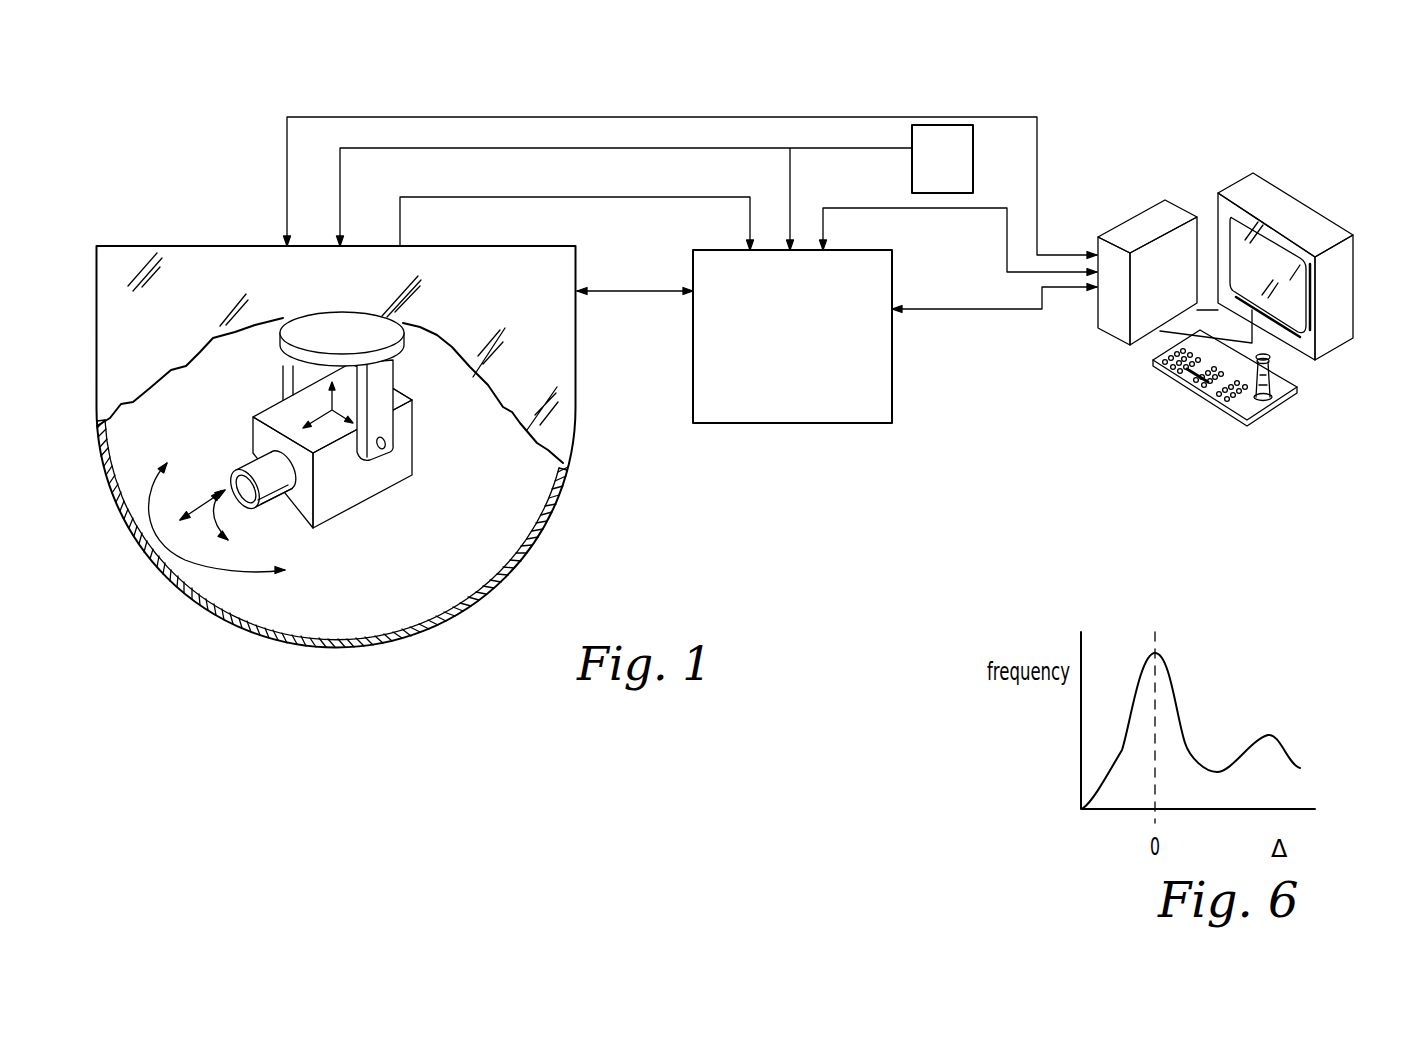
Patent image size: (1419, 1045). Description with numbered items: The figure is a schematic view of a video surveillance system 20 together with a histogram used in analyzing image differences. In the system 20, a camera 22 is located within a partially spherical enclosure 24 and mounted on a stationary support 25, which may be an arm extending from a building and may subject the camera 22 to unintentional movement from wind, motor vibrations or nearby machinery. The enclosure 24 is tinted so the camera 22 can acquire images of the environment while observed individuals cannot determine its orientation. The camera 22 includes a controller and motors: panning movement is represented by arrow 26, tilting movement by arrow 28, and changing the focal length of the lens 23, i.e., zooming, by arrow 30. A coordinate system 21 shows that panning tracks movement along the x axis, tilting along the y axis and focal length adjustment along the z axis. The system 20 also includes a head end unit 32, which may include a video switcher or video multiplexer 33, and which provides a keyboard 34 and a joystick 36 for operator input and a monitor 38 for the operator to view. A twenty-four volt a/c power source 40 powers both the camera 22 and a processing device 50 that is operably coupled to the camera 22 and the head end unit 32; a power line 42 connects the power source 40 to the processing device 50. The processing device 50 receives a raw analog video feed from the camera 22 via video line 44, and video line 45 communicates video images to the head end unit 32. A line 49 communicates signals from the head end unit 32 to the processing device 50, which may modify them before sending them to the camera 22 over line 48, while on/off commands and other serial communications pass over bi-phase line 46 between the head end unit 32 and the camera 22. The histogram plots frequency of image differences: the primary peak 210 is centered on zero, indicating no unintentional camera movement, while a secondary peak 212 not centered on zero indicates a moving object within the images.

In FIG. 1, the video surveillance system 20 is at (559, 62).
In FIG. 1, the coordinate system 21 is at (325, 419).
In FIG. 1, the camera 22 is at (357, 489).
In FIG. 1, the lens 23 is at (250, 481).
In FIG. 1, the partially spherical enclosure 24 is at (560, 437).
In FIG. 1, the support 25 is at (322, 330).
In FIG. 1, the arrow 26 is at (212, 565).
In FIG. 1, the arrow 28 is at (208, 508).
In FIG. 1, the arrow 30 is at (225, 498).
In FIG. 1, the head end unit 32 is at (1128, 469).
In FIG. 1, the video multiplexer 33 is at (1140, 215).
In FIG. 1, the keyboard 34 is at (1173, 377).
In FIG. 1, the joystick 36 is at (1288, 397).
In FIG. 1, the monitor 38 is at (1310, 290).
In FIG. 1, the 24 volt a/c power source 40 is at (960, 125).
In FIG. 1, the power line 42 is at (773, 148).
In FIG. 1, the video line 44 is at (598, 197).
In FIG. 1, the video line 45 is at (968, 212).
In FIG. 1, the bi-phase line 46 is at (628, 117).
In FIG. 1, the line 48 is at (632, 293).
In FIG. 1, the line 49 is at (952, 309).
In FIG. 1, the processing device 50 is at (892, 413).
In FIG. 6, the primary peak 210 is at (1155, 653).
In FIG. 6, the secondary peak 212 is at (1268, 735).